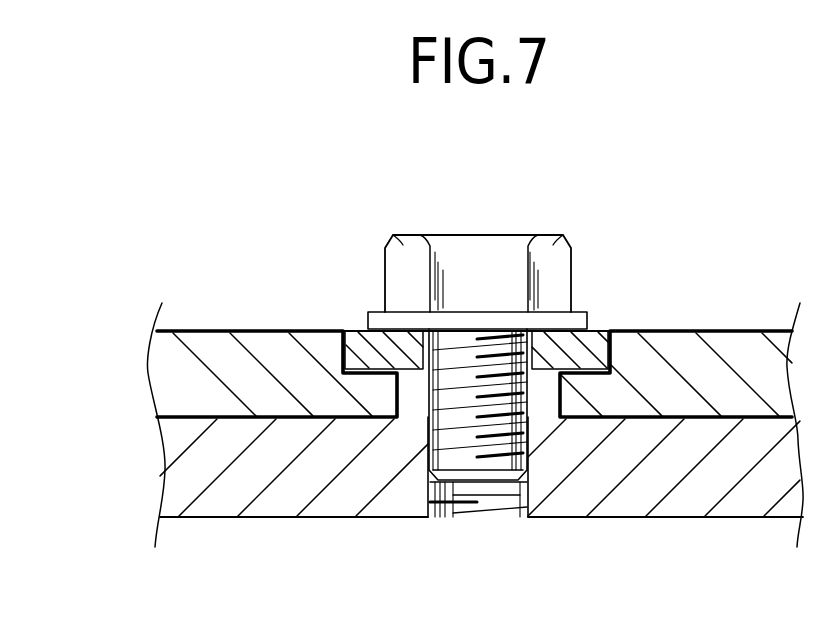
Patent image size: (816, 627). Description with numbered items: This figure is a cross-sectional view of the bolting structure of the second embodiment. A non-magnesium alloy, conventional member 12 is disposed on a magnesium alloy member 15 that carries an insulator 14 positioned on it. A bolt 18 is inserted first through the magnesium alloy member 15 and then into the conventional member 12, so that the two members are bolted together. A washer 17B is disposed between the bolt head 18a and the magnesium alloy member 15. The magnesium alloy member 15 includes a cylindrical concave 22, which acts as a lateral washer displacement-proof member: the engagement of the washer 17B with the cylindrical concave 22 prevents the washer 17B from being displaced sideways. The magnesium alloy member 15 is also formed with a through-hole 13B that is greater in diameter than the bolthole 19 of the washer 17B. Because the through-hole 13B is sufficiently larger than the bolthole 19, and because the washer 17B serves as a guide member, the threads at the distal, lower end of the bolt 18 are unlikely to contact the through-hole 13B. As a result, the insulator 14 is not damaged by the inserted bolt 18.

The conventional member 12 is at (160, 470).
The through-hole 13B is at (554, 396).
The insulator 14 is at (192, 330).
The magnesium alloy member 15 is at (148, 373).
The washer 17B is at (479, 292).
The bolt 18 is at (520, 364).
The bolt head 18a is at (575, 249).
The bolthole 19 is at (492, 332).
The cylindrical concave 22 is at (605, 347).